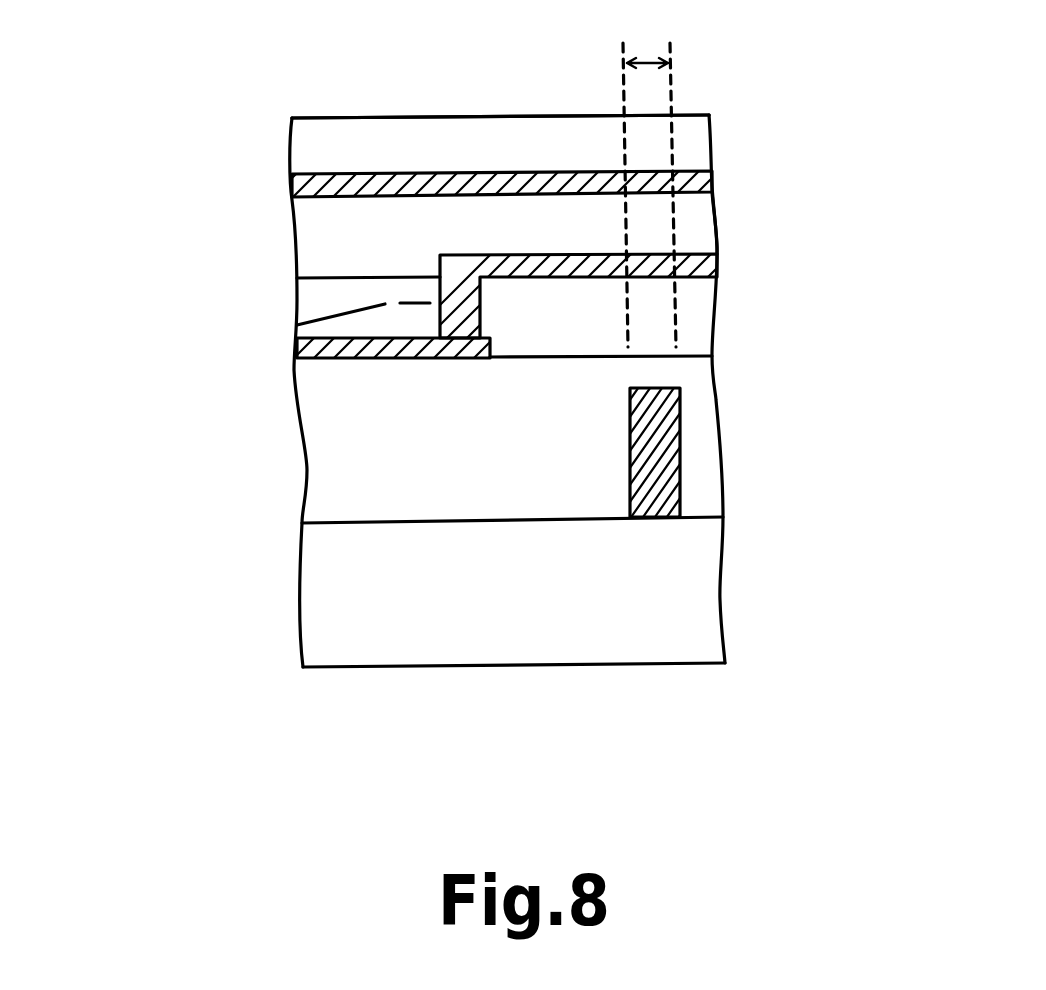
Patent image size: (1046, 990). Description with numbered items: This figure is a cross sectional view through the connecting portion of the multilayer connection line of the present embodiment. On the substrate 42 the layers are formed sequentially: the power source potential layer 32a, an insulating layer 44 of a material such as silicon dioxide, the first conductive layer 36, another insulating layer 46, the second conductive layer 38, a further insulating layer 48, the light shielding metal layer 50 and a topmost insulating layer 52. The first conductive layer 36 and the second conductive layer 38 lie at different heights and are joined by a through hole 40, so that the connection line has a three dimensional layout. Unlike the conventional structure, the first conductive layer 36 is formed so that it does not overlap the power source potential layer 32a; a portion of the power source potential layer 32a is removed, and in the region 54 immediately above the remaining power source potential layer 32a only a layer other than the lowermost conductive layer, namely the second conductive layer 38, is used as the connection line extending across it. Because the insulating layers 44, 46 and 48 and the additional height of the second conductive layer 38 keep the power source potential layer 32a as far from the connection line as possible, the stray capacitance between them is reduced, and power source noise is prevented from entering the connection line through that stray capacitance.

The insulating layer 52 is at (702, 133).
The light shielding metal layer 50 is at (712, 187).
The insulating layer 48 is at (703, 227).
The second conductive layer 38 is at (733, 265).
The insulating layer 46 is at (300, 287).
The through hole 40 is at (297, 325).
The first conductive layer 36 is at (280, 349).
The insulating layer 44 is at (722, 407).
The power source potential layer 32a is at (672, 450).
The substrate 42 is at (690, 583).
The region 54 is at (649, 175).